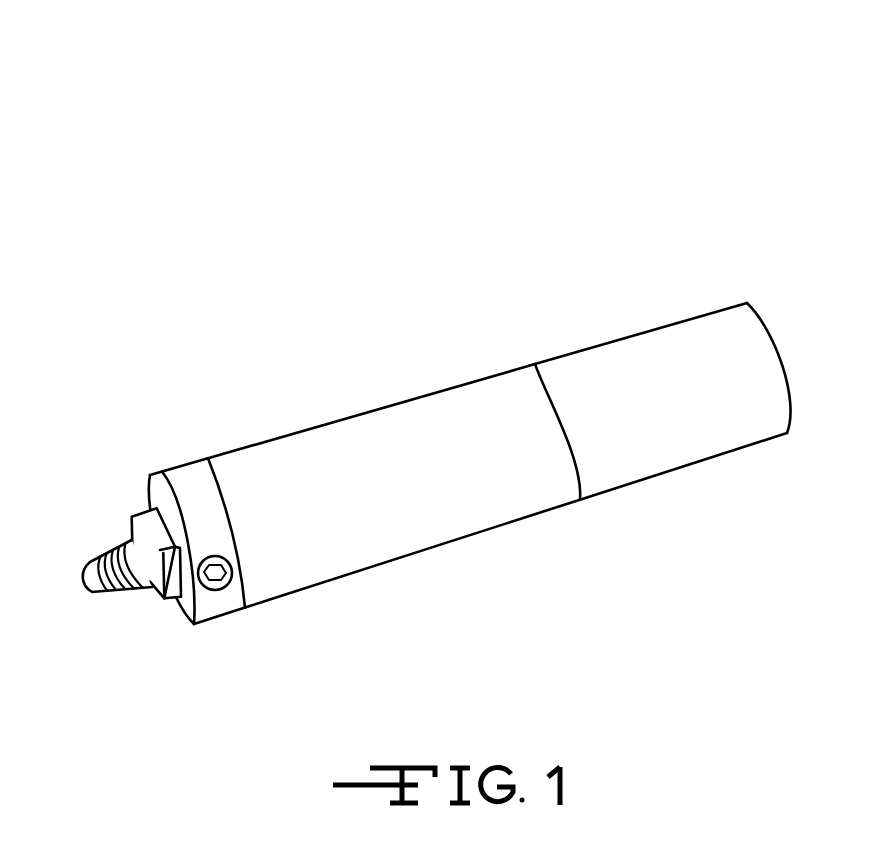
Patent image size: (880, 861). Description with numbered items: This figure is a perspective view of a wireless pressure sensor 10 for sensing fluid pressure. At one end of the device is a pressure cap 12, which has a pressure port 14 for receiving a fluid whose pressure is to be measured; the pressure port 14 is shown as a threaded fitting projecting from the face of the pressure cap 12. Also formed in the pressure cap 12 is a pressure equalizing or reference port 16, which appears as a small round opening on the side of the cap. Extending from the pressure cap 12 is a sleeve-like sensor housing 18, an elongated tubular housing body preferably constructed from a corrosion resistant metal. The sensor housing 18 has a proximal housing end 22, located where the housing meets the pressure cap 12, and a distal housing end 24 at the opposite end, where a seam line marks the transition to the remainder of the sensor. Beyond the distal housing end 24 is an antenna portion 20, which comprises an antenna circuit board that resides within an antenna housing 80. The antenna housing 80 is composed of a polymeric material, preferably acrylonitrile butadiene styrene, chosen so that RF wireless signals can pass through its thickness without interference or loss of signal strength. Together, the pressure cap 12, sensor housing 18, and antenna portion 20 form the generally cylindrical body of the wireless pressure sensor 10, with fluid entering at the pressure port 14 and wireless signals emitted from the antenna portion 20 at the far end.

The wireless pressure sensor 10 is at (418, 361).
The pressure cap 12 is at (188, 492).
The pressure port 14 is at (87, 590).
The reference port 16 is at (225, 588).
The sensor housing 18 is at (350, 545).
The antenna portion 20 is at (705, 273).
The proximal housing end 22 is at (235, 497).
The distal housing end 24 is at (548, 408).
The antenna housing 80 is at (667, 435).